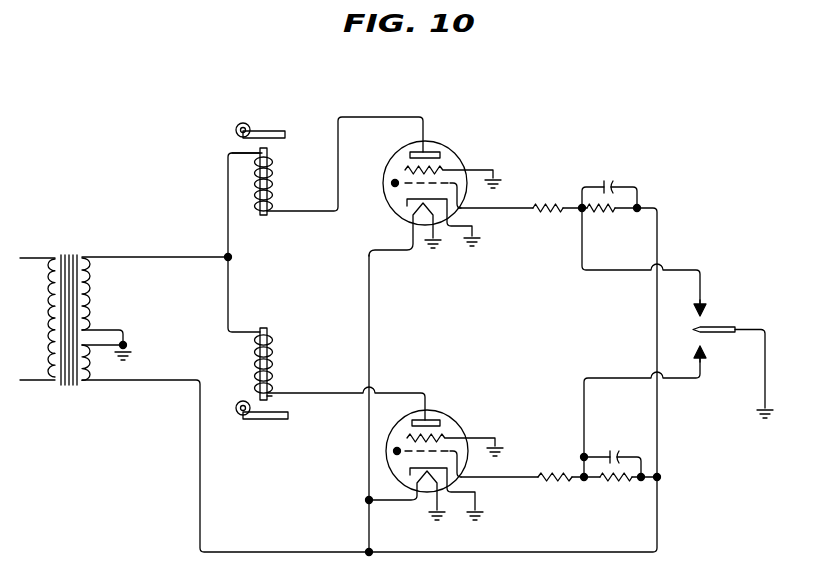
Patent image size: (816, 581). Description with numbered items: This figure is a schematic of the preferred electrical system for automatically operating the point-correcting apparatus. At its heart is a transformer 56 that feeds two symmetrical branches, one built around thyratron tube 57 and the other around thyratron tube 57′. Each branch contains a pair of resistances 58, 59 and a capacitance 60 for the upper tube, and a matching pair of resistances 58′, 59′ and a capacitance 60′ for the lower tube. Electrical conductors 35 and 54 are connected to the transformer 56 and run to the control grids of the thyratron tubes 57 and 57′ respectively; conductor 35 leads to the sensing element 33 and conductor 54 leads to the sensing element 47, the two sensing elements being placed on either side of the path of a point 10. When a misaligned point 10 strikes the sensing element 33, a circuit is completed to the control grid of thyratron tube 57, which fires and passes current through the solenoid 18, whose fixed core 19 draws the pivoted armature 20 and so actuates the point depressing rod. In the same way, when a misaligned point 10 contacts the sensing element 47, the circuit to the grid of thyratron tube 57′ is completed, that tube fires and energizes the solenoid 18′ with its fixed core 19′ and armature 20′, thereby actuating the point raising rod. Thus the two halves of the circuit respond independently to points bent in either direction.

The transformer 56 is at (68, 256).
The solenoid 18 is at (297, 140).
The fixed core 19 is at (258, 148).
The armature 20 is at (284, 131).
The thyratron tube 57 is at (449, 163).
The resistance 58 is at (549, 212).
The resistance 59 is at (603, 212).
The capacitance 60 is at (610, 179).
The electrical conductor 35 is at (702, 281).
The sensing element 33 is at (702, 313).
The misaligned point 10 is at (716, 328).
The sensing element 47 is at (704, 352).
The electrical conductor 54 is at (708, 378).
The solenoid 18′ is at (245, 342).
The fixed core 19′ is at (268, 398).
The armature 20′ is at (272, 420).
The thyratron tube 57′ is at (449, 424).
The resistance 58′ is at (554, 481).
The resistance 59′ is at (614, 481).
The capacitance 60′ is at (610, 452).